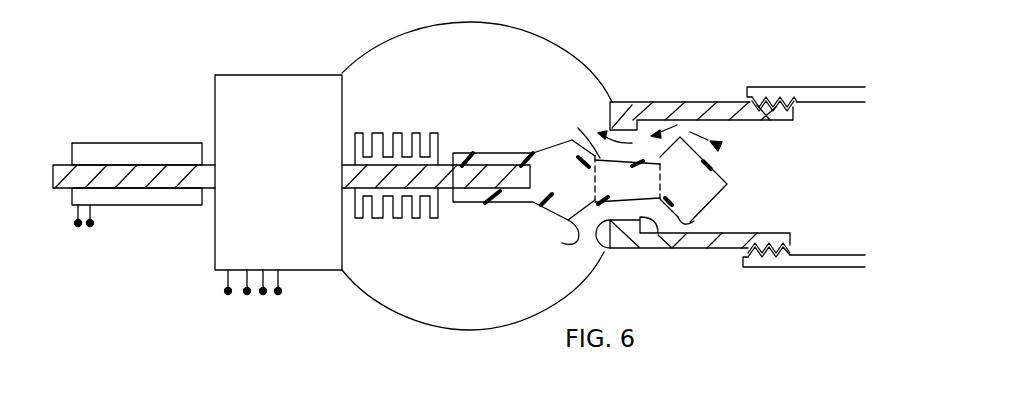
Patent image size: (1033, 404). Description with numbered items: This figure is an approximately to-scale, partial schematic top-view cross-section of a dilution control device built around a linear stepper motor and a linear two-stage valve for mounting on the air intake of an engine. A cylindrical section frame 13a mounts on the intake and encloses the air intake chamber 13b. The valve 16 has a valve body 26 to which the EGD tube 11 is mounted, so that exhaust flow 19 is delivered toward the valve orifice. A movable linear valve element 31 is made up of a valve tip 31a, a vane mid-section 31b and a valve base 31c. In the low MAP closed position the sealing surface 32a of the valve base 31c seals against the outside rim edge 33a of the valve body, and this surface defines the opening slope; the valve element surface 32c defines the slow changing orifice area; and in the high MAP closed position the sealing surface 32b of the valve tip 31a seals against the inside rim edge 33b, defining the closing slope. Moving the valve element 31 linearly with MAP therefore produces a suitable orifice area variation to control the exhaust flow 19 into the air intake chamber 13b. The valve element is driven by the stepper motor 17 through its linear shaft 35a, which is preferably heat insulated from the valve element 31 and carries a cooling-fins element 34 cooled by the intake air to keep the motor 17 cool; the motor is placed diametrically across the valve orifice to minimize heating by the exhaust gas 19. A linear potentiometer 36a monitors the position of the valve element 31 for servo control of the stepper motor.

The EGD tube 11 is at (803, 87).
The cylindrical section frame 13a is at (548, 42).
The air intake chamber 13b is at (525, 68).
The valve 16 is at (718, 98).
The stepper motor 17 is at (255, 75).
The exhaust flow 19 is at (722, 147).
The valve body 26 is at (662, 102).
The valve element 31 is at (590, 163).
The valve tip 31a is at (668, 192).
The vane mid-section 31b is at (643, 192).
The valve base 31c is at (578, 192).
The sealing surface 32a is at (562, 243).
The sealing surface 32b is at (694, 221).
The valve element surface 32c is at (578, 128).
The outside rim edge 33a is at (604, 250).
The inside rim edge 33b is at (700, 251).
The cooling-fins element 34 is at (413, 133).
The linear shaft 35a is at (423, 175).
The linear potentiometer 36a is at (117, 143).